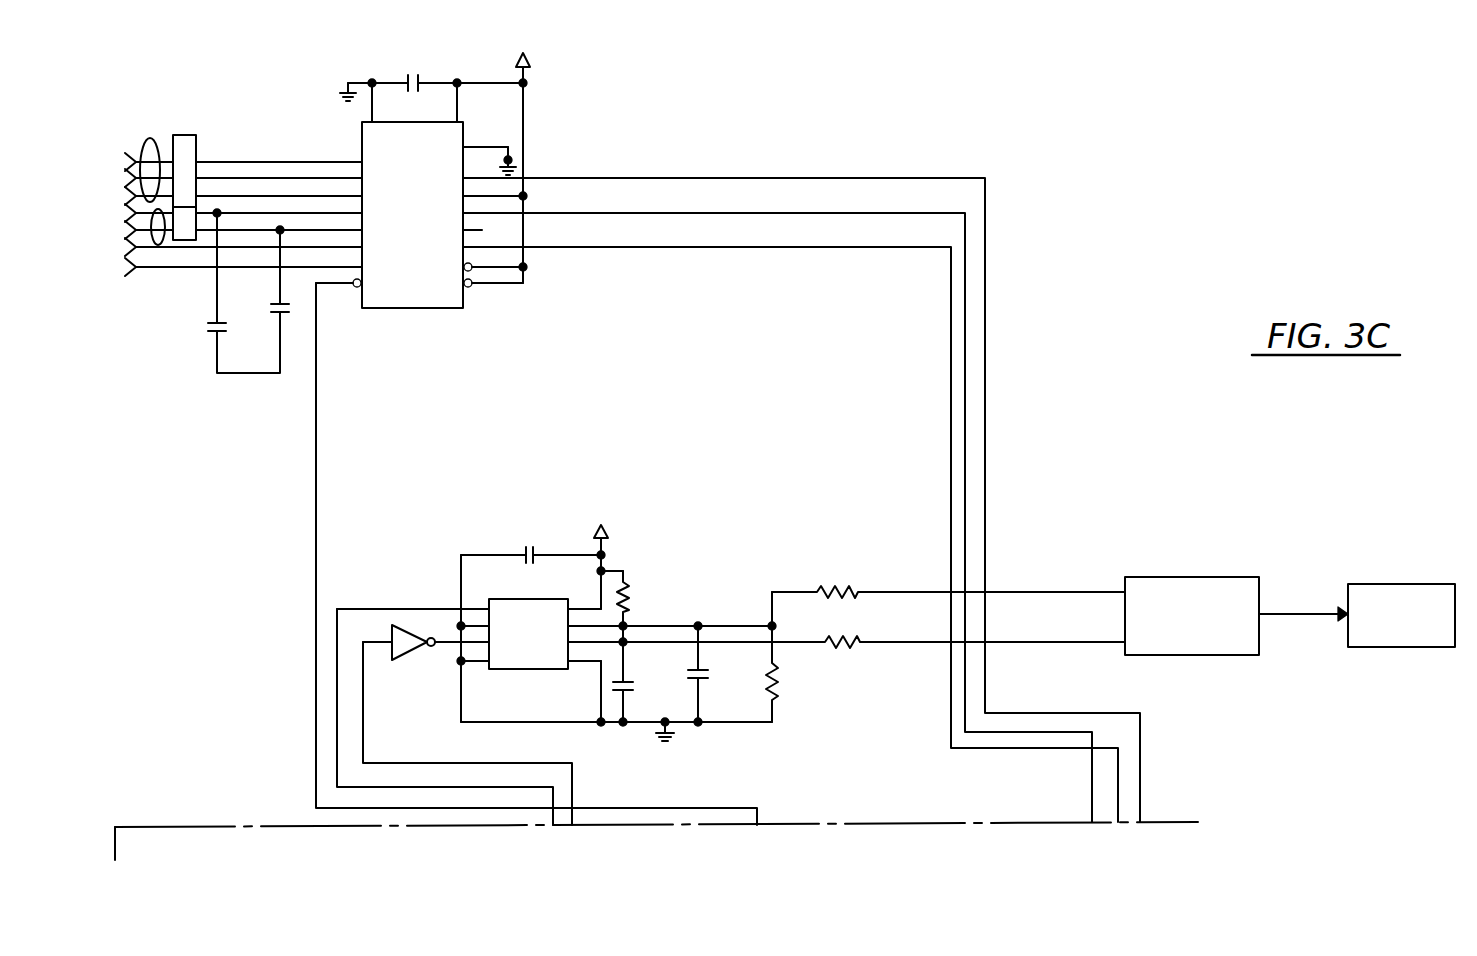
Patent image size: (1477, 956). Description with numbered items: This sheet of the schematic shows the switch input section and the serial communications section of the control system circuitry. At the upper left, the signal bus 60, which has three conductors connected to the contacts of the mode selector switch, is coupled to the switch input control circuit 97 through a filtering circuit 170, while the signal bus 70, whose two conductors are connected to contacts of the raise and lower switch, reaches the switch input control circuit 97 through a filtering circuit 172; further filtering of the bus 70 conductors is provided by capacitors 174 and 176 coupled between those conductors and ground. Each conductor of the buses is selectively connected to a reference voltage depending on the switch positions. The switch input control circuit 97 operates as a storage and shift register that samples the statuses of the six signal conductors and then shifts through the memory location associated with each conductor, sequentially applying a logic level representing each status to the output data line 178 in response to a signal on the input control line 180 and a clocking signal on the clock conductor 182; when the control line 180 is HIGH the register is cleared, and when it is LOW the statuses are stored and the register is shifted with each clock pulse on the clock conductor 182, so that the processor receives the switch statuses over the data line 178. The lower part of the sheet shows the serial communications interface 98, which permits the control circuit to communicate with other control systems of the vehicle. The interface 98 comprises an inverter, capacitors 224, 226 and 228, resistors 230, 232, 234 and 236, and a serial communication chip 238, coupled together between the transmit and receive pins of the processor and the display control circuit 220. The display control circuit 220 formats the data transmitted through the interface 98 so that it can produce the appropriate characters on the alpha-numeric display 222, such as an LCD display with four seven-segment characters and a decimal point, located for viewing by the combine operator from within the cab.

The signal bus 60 is at (147, 137).
The signal bus 70 is at (243, 255).
The switch input control circuit 97 is at (362, 124).
The serial communications interface 98 is at (784, 560).
The filtering circuit 170 is at (188, 135).
The filtering circuit 172 is at (190, 240).
The capacitor 174 is at (213, 326).
The capacitor 176 is at (270, 310).
The output data line 178 is at (570, 212).
The input control line 180 is at (656, 144).
The clock conductor 182 is at (570, 246).
The display control circuit 220 is at (1188, 552).
The alpha-numeric display 222 is at (1405, 565).
The capacitor 224 is at (530, 546).
The capacitor 226 is at (615, 684).
The capacitor 228 is at (688, 676).
The resistor 230 is at (645, 590).
The resistor 232 is at (782, 688).
The resistor 234 is at (845, 588).
The resistor 236 is at (845, 632).
The serial communication chip 238 is at (510, 670).